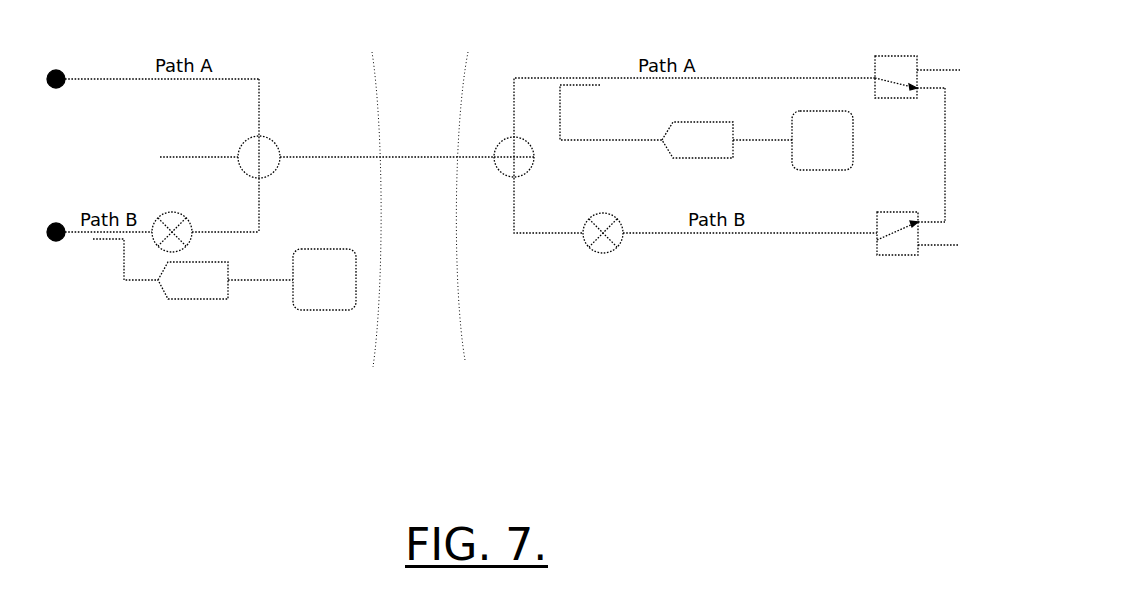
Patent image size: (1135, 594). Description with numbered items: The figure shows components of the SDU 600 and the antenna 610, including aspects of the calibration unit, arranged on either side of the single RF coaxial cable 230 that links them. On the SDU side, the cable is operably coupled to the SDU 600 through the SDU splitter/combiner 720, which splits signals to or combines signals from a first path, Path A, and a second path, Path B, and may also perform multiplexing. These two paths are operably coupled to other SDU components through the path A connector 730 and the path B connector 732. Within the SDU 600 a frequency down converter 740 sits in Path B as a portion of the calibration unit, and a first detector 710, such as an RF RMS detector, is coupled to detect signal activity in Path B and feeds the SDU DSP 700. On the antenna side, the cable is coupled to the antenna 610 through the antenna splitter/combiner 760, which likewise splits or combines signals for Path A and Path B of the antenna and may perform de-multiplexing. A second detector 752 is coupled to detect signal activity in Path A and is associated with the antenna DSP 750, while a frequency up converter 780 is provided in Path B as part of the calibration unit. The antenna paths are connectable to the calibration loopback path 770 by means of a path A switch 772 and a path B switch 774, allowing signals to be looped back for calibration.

The path A connector 730 is at (88, 63).
The path B connector 732 is at (70, 251).
The SDU splitter/combiner 720 is at (253, 148).
The single RF coaxial cable 230 is at (387, 137).
The frequency down converter 740 is at (205, 231).
The first detector 710 is at (180, 296).
The SDU DSP 700 is at (298, 294).
The SDU 600 is at (378, 242).
The antenna 610 is at (486, 234).
The antenna splitter/combiner 760 is at (525, 173).
The second detector 752 is at (687, 128).
The antenna DSP 750 is at (794, 129).
The frequency up converter 780 is at (606, 242).
The path A switch 772 is at (881, 66).
The calibration loopback path 770 is at (916, 155).
The path B switch 774 is at (870, 247).